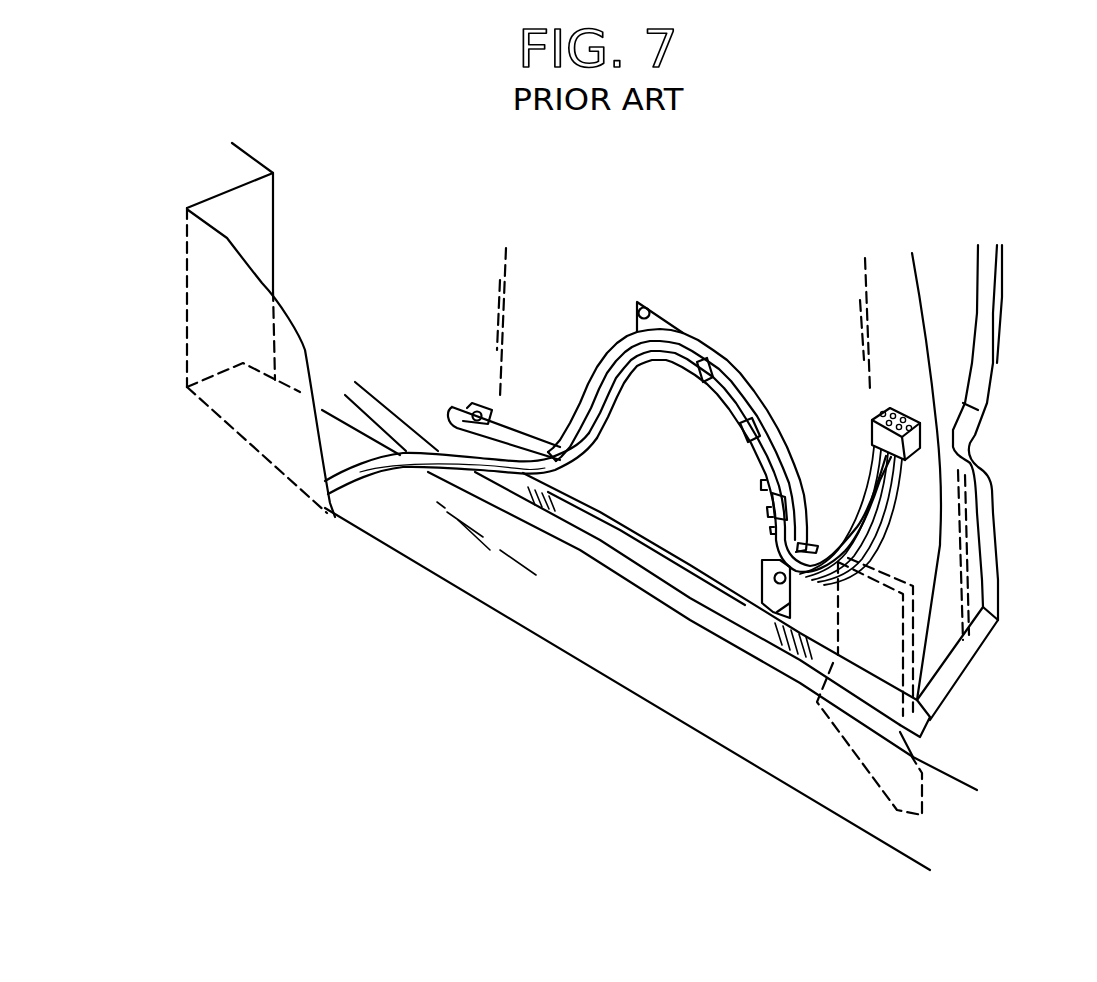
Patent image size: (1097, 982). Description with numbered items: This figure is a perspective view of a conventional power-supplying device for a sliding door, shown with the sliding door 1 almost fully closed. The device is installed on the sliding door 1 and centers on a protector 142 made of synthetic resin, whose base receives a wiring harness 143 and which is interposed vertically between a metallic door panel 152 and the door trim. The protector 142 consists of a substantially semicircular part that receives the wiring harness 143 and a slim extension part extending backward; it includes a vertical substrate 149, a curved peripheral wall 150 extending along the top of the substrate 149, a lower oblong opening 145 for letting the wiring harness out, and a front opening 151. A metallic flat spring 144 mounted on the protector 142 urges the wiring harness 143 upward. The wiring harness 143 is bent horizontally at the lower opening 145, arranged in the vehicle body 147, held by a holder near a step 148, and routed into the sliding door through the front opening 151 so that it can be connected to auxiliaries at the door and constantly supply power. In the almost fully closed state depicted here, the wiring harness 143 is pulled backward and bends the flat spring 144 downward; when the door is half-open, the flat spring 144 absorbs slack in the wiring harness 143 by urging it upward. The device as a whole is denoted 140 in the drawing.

The sliding door 1 is at (1003, 627).
The wire harness protector 140 is at (698, 408).
The protector 142 is at (748, 378).
The wiring harness 143 is at (640, 377).
The flat spring 144 is at (727, 413).
The lower oblong opening 145 is at (641, 541).
The vehicle body 147 is at (277, 238).
The step 148 is at (442, 547).
The vertical substrate 149 is at (714, 557).
The curved peripheral wall 150 is at (770, 423).
The front opening 151 is at (817, 550).
The door panel 152 is at (903, 347).